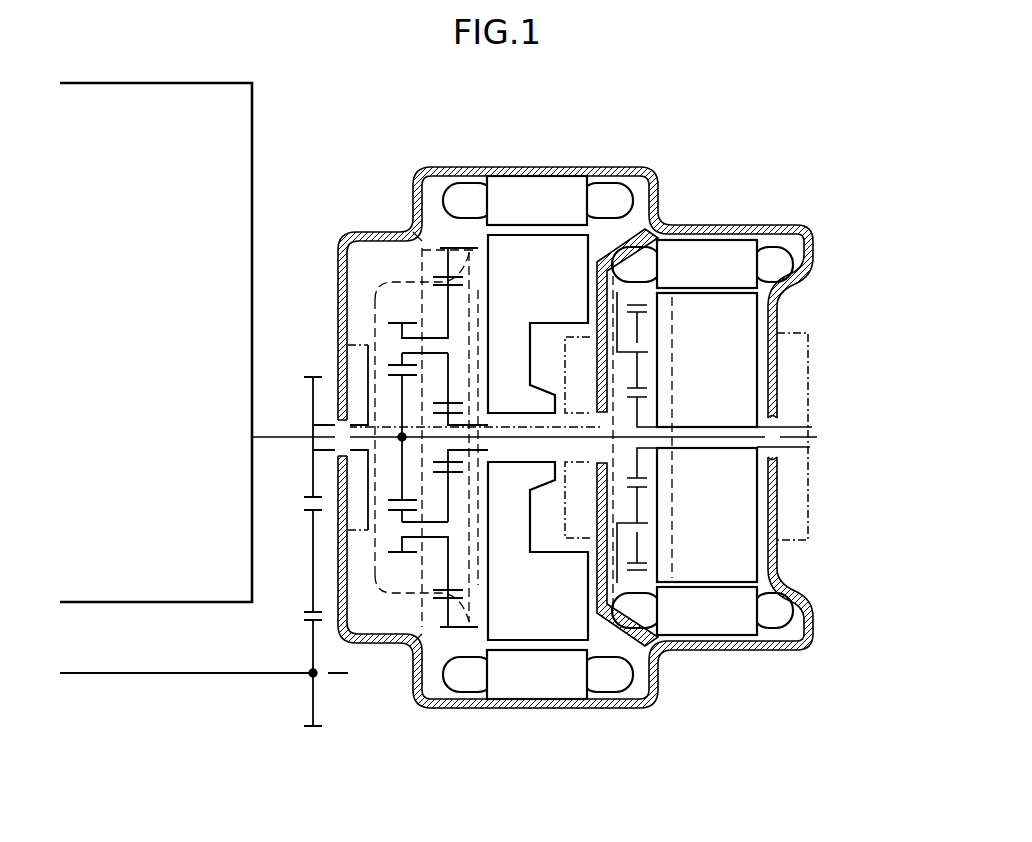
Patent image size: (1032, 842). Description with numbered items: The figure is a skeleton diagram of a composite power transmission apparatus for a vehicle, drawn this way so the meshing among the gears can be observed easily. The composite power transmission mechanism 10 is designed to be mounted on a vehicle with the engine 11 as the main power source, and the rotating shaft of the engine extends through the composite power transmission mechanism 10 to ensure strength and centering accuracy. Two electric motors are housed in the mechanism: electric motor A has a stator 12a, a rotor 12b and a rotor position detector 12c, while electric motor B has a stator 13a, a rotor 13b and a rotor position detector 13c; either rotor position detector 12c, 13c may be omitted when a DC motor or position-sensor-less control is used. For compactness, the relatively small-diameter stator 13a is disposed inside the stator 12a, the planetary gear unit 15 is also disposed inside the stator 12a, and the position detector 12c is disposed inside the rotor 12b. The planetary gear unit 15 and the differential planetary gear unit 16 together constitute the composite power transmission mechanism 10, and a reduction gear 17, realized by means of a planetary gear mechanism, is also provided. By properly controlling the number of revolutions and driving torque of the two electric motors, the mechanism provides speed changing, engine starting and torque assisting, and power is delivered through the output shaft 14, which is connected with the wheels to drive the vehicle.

The composite power transmission mechanism 10 is at (797, 226).
The engine 11 is at (253, 140).
The stator of electric motor A 12a is at (515, 193).
The rotor of electric motor A 12b is at (553, 277).
The rotor position detector for electric motor A 12c is at (577, 527).
The stator of electric motor B 13a is at (700, 622).
The rotor of electric motor B 13b is at (725, 568).
The rotor position detector of electric motor B 13c is at (812, 352).
The output shaft 14 is at (222, 677).
The planetary gear unit 15 is at (412, 228).
The differential planetary gear unit 16 is at (375, 284).
The reduction gear 17 is at (645, 410).